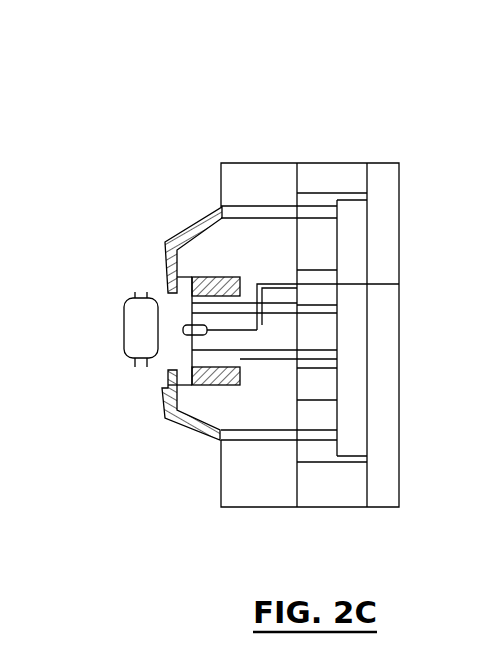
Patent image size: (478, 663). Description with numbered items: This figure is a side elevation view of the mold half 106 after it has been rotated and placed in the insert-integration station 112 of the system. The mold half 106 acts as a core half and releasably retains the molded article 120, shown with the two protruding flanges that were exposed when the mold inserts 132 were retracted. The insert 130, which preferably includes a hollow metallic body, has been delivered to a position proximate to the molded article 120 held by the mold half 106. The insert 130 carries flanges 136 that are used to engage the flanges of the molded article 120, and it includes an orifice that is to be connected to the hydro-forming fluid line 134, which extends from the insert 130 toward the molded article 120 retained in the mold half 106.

The mold half 106 is at (238, 463).
The insert-integration station 112 is at (273, 139).
The molded article 120 is at (188, 229).
The insert 130 is at (124, 330).
The mold inserts 132 is at (230, 367).
The hydro-forming fluid line 134 is at (184, 323).
The flanges 136 is at (134, 292).